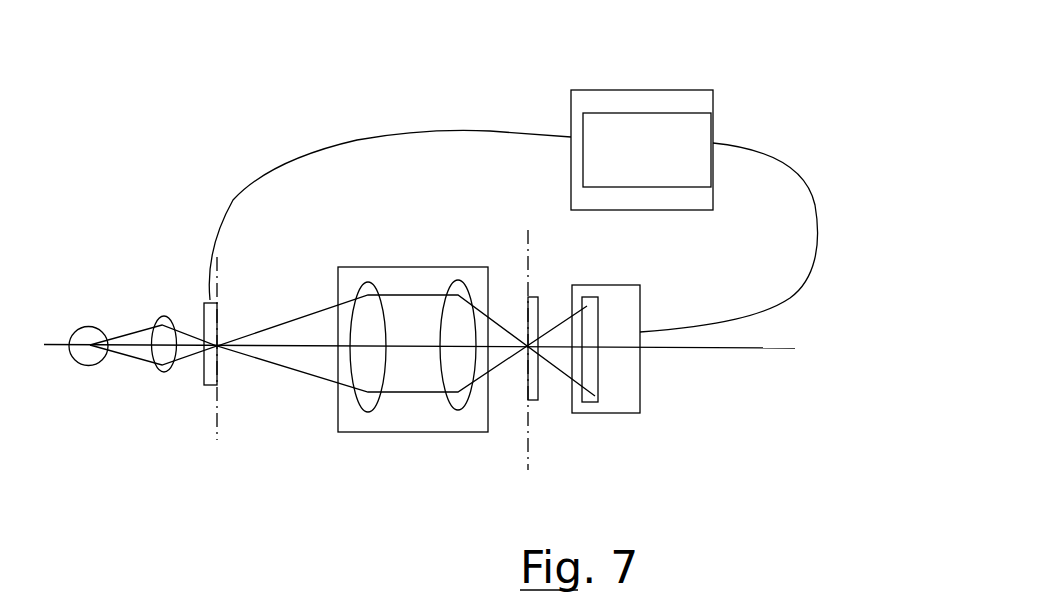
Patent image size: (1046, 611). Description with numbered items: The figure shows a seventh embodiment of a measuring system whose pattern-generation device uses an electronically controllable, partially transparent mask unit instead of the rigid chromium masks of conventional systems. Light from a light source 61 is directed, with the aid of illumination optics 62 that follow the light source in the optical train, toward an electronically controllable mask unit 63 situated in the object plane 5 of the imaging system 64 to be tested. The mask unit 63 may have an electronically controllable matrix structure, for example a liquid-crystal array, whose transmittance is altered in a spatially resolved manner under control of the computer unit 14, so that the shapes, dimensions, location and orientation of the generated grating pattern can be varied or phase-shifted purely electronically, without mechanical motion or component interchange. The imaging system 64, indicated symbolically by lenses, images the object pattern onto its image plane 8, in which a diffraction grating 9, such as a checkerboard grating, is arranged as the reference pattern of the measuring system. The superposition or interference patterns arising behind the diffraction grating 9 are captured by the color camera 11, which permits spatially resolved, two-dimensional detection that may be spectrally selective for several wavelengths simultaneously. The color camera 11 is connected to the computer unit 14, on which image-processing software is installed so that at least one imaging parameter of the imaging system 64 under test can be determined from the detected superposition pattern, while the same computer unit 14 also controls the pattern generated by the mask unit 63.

The light source 61 is at (90, 360).
The illumination optics 62 is at (164, 370).
The electronically controllable mask unit 63 is at (217, 368).
The object plane 5 is at (218, 275).
The imaging system 64 is at (408, 420).
The image plane 8 is at (529, 247).
The diffraction grating 9 is at (533, 392).
The color camera 11 is at (626, 418).
The computer unit 14 is at (674, 88).